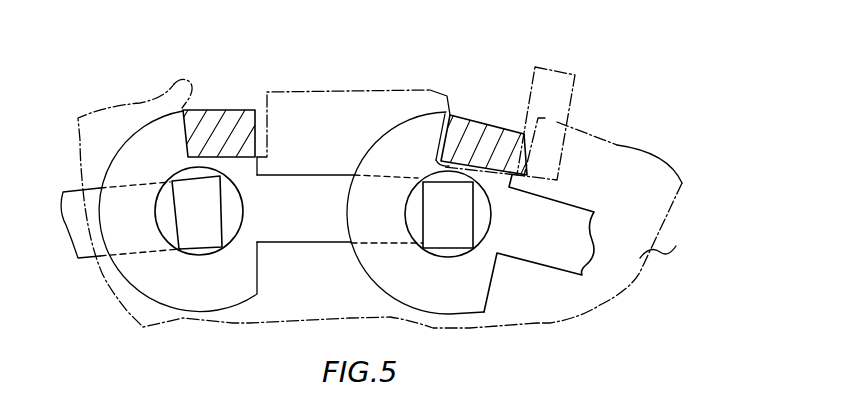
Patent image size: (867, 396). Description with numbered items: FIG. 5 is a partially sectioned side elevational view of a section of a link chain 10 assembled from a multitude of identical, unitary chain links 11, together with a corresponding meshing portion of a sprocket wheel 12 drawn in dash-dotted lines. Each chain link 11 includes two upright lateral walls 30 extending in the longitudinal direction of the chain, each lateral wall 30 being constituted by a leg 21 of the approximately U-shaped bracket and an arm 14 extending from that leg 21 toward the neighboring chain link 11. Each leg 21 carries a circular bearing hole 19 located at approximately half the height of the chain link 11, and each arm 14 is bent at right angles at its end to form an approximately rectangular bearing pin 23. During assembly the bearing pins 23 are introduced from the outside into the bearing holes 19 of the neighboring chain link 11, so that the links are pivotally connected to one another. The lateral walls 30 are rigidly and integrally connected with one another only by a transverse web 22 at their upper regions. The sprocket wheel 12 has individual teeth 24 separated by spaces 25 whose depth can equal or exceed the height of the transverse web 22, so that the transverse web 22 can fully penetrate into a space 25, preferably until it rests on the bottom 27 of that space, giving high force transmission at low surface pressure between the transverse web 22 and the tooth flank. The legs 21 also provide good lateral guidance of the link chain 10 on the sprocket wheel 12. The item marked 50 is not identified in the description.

The link chain 10 is at (95, 150).
The chain link 11 is at (61, 186).
The sprocket wheel 12 is at (678, 247).
The arm 14 is at (312, 187).
The bearing hole 19 is at (236, 224).
The leg 21 is at (143, 272).
The transverse web 22 is at (230, 124).
The bearing pin 23 is at (190, 233).
The tooth 24 is at (292, 110).
The space 25 is at (174, 83).
The bottom 27 is at (433, 158).
The lateral wall 30 is at (402, 278).
The guide rail 50 is at (568, 112).